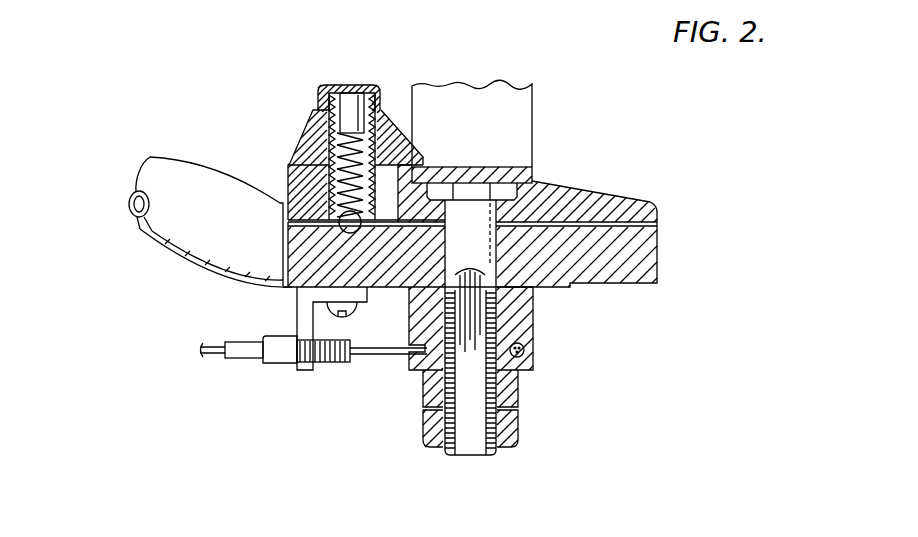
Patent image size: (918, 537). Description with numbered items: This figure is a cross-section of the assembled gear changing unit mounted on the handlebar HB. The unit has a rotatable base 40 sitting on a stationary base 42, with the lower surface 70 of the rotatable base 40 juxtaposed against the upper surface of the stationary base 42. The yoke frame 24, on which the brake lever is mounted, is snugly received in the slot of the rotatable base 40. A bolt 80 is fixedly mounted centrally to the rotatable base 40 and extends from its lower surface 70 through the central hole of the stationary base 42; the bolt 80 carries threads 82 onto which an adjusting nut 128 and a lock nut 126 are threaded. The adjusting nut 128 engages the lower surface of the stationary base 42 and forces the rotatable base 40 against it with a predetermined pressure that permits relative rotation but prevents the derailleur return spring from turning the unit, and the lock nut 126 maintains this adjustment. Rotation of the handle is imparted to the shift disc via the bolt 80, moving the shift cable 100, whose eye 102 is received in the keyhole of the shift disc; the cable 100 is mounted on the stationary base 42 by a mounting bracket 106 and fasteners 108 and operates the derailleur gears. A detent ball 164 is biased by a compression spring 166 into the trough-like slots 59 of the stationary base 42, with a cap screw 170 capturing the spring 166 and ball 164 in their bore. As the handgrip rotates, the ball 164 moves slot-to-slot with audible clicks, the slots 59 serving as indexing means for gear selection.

The handlebar HB is at (193, 177).
The detent ball 164 is at (292, 165).
The compression spring 166 is at (378, 93).
The cap screw 170 is at (350, 85).
The yoke frame 24 is at (533, 97).
The rotatable base 40 is at (624, 207).
The bolt 80 is at (480, 227).
The lower surface of rotatable base 70 is at (650, 223).
The stationary base 42 is at (641, 258).
The trough-like slots 59 is at (405, 230).
The threads 82 is at (497, 322).
The eye 102 is at (525, 350).
The adjusting nut 128 is at (513, 391).
The lock nut 126 is at (516, 433).
The mounting bracket 106 is at (288, 300).
The fasteners 108 is at (354, 314).
The shift cable 100 is at (385, 367).